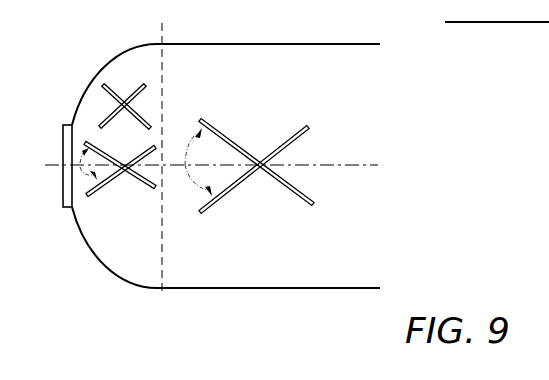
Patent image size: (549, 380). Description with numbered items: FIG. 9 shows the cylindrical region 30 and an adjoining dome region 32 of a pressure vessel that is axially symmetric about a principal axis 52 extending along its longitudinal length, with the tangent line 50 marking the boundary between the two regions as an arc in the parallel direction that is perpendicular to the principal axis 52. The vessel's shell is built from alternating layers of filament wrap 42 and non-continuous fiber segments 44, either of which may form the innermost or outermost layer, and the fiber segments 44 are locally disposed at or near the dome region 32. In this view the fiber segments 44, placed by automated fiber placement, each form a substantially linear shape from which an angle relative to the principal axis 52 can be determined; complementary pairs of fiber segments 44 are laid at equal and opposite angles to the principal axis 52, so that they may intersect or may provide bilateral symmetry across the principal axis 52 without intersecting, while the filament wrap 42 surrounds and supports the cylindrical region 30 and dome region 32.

The cylindrical region 30 is at (376, 297).
The dome region 32 is at (157, 297).
The filament wrap 42 is at (235, 80).
The fiber segment 44 is at (88, 142).
The tangent line 50 is at (162, 28).
The principal axis 52 is at (45, 163).